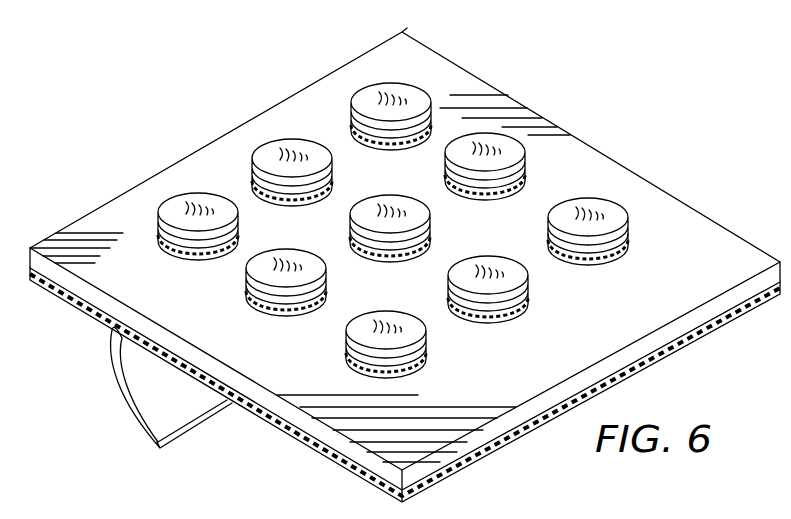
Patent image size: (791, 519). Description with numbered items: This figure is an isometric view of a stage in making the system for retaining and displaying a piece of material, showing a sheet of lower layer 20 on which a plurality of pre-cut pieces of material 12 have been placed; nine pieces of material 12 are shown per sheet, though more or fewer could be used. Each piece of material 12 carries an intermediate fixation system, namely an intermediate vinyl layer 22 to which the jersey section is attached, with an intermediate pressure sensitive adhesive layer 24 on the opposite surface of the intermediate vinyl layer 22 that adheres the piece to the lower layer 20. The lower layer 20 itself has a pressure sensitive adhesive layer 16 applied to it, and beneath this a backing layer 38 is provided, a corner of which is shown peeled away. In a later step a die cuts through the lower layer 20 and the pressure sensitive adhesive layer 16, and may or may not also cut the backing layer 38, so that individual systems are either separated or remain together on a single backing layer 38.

The piece of material 12 is at (422, 218).
The pressure sensitive adhesive layer 16 is at (75, 303).
The lower layer 20 is at (718, 258).
The intermediate vinyl layer 22 is at (617, 225).
The intermediate pressure sensitive adhesive layer 24 is at (611, 262).
The backing layer 38 is at (115, 377).